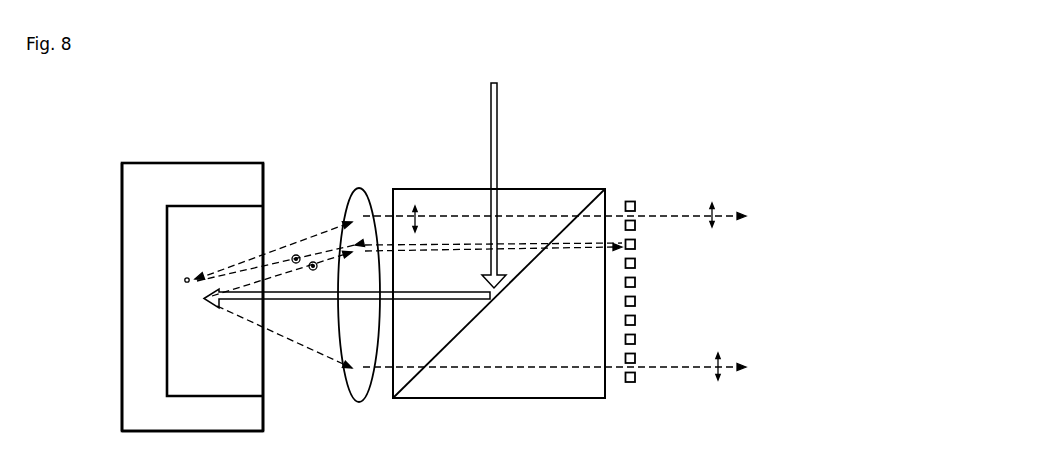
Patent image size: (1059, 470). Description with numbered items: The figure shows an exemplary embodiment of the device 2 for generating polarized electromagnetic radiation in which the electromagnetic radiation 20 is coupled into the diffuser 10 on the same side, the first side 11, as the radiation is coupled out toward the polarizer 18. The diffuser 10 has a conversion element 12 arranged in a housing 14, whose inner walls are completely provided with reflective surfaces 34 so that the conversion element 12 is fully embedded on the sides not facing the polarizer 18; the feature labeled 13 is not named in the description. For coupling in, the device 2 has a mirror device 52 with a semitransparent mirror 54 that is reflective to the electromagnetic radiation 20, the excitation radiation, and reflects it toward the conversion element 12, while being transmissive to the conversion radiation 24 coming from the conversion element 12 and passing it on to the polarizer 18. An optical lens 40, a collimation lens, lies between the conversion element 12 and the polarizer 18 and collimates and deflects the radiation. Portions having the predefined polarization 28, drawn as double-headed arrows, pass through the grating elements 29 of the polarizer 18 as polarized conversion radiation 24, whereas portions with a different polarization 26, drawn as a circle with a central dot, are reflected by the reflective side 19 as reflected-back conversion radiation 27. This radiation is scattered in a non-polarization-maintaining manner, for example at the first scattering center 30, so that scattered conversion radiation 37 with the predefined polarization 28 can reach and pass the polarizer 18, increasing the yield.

The device 2 is at (407, 78).
The diffuser 10 is at (232, 156).
The first side 11 is at (263, 400).
The conversion element 12 is at (216, 206).
The bottom wall 13 is at (121, 406).
The housing 14 is at (121, 198).
The polarizer 18 is at (631, 190).
The reflective side 19 is at (622, 390).
The electromagnetic radiation 20 is at (498, 107).
The polarized conversion radiation 24 is at (687, 211).
The different polarization 26 is at (296, 255).
The reflected-back conversion radiation 27 is at (583, 244).
The predefined polarization 28 is at (712, 224).
The grating elements 29 is at (636, 244).
The first scattering center 30 is at (185, 277).
The reflective surfaces 34 is at (205, 207).
The scattered conversion radiation 37 is at (340, 220).
The optical lens 40 is at (358, 188).
The mirror device 52 is at (458, 188).
The semitransparent mirror 54 is at (492, 303).